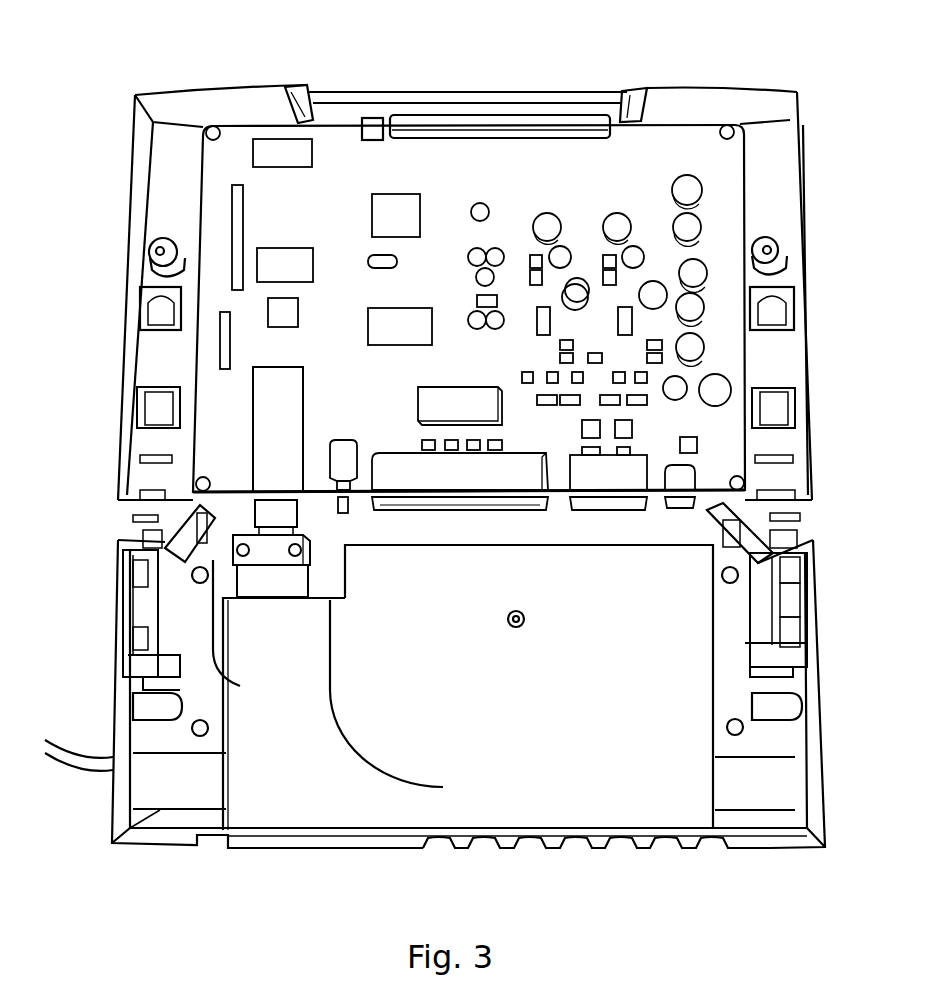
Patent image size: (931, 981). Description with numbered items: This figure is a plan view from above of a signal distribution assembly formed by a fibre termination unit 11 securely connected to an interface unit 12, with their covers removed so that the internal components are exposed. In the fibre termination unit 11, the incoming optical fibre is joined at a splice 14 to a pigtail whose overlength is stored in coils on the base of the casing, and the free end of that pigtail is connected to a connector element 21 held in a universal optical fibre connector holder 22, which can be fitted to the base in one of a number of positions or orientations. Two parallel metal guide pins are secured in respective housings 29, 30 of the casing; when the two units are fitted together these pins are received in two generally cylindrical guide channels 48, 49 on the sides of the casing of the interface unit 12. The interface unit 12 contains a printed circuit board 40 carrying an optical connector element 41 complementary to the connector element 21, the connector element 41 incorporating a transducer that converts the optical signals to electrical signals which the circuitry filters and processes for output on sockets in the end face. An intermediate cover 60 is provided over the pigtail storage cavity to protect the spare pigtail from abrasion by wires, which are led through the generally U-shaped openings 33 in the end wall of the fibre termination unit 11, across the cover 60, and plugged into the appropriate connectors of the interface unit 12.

The fibre termination unit 11 is at (106, 685).
The interface unit 12 is at (122, 251).
The splice 14 is at (73, 767).
The connector element 21 is at (287, 532).
The universal optical fibre connector holder 22 is at (293, 575).
The housing 29 is at (792, 632).
The housing 30 is at (137, 642).
The U-shape notches or openings 33 is at (575, 850).
The printed circuit board 40 is at (342, 157).
The optical connector element 41 is at (267, 447).
The guide channel 48 is at (153, 408).
The guide channel 49 is at (775, 412).
The intermediate cover 60 is at (317, 747).